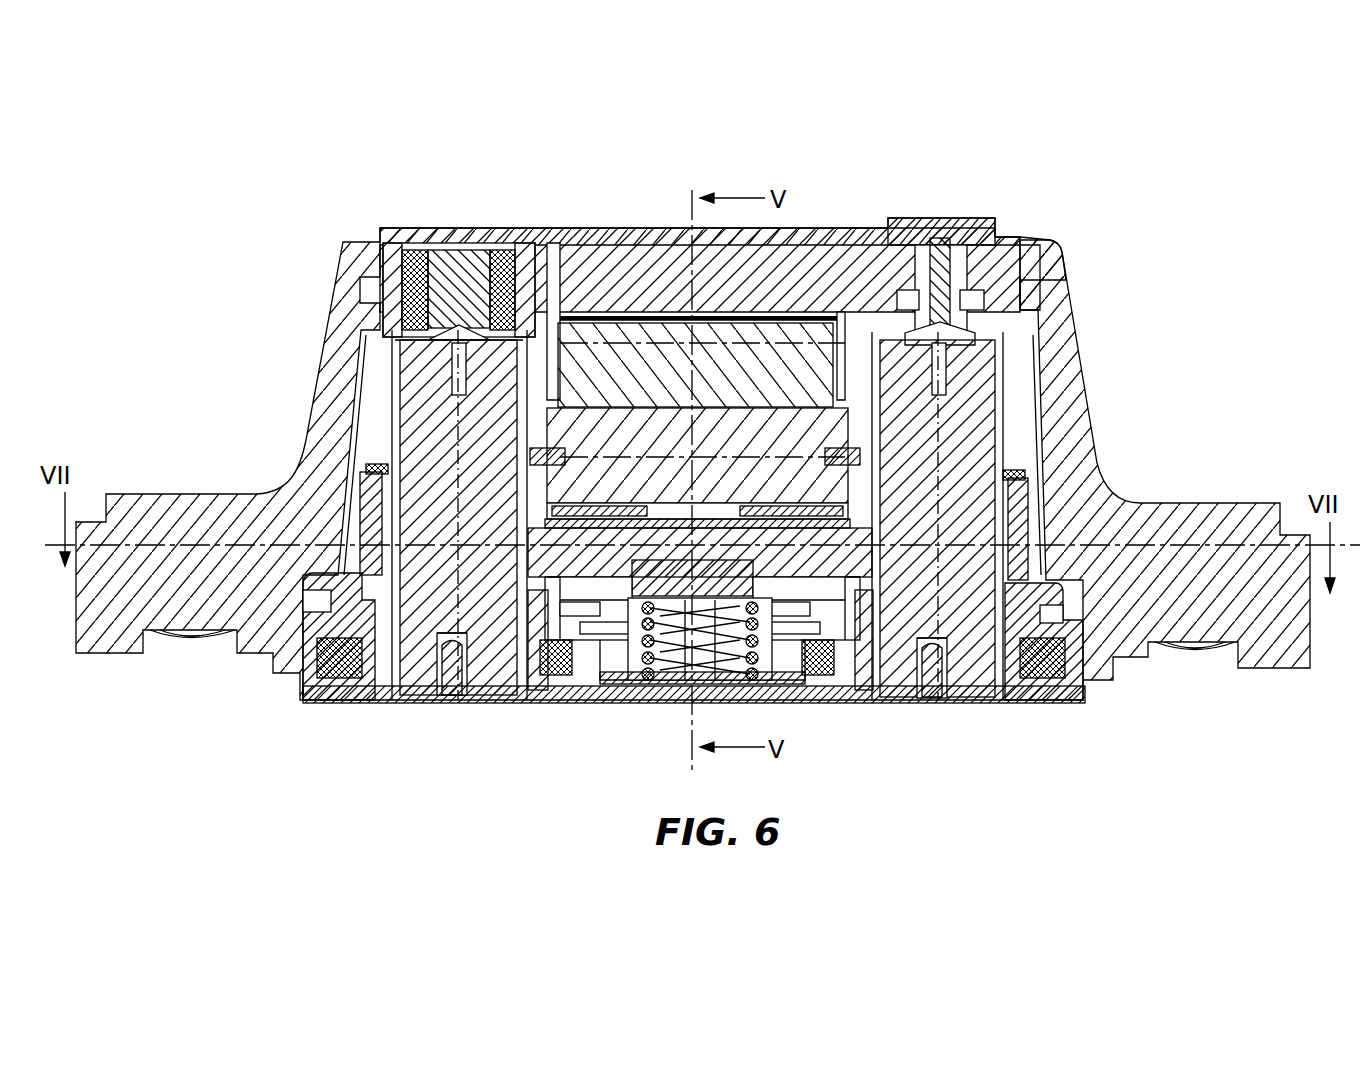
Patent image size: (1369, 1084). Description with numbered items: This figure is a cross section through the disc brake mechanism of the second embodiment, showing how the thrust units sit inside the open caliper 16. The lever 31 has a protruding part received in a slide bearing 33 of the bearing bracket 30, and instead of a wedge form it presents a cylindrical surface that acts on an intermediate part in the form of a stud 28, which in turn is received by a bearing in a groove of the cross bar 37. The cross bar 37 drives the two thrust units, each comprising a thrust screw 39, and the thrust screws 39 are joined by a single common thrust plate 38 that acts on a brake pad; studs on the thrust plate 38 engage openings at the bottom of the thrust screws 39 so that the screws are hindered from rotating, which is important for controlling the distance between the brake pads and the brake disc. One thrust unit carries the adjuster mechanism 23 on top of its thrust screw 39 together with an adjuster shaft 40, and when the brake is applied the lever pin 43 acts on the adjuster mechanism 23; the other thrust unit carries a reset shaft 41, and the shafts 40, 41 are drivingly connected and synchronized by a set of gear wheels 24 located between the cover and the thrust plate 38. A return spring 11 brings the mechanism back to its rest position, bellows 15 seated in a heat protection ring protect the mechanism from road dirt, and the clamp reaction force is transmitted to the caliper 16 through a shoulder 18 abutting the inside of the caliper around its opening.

The return spring 11 is at (745, 703).
The bellows 15 is at (838, 702).
The caliper 16 is at (1220, 520).
The shoulder 18 is at (1068, 284).
The adjuster mechanism 23 is at (433, 250).
The gear wheels 24 is at (645, 702).
The stud 28 is at (918, 412).
The bearing bracket 30 is at (840, 250).
The lever 31 is at (655, 330).
The slide bearing 33 is at (941, 212).
The cross bar 37 is at (522, 692).
The thrust plate 38 is at (578, 702).
The thrust screw 39 is at (396, 698).
The adjuster shaft 40 is at (360, 478).
The reset shaft 41 is at (1012, 232).
The lever pin 43 is at (550, 258).